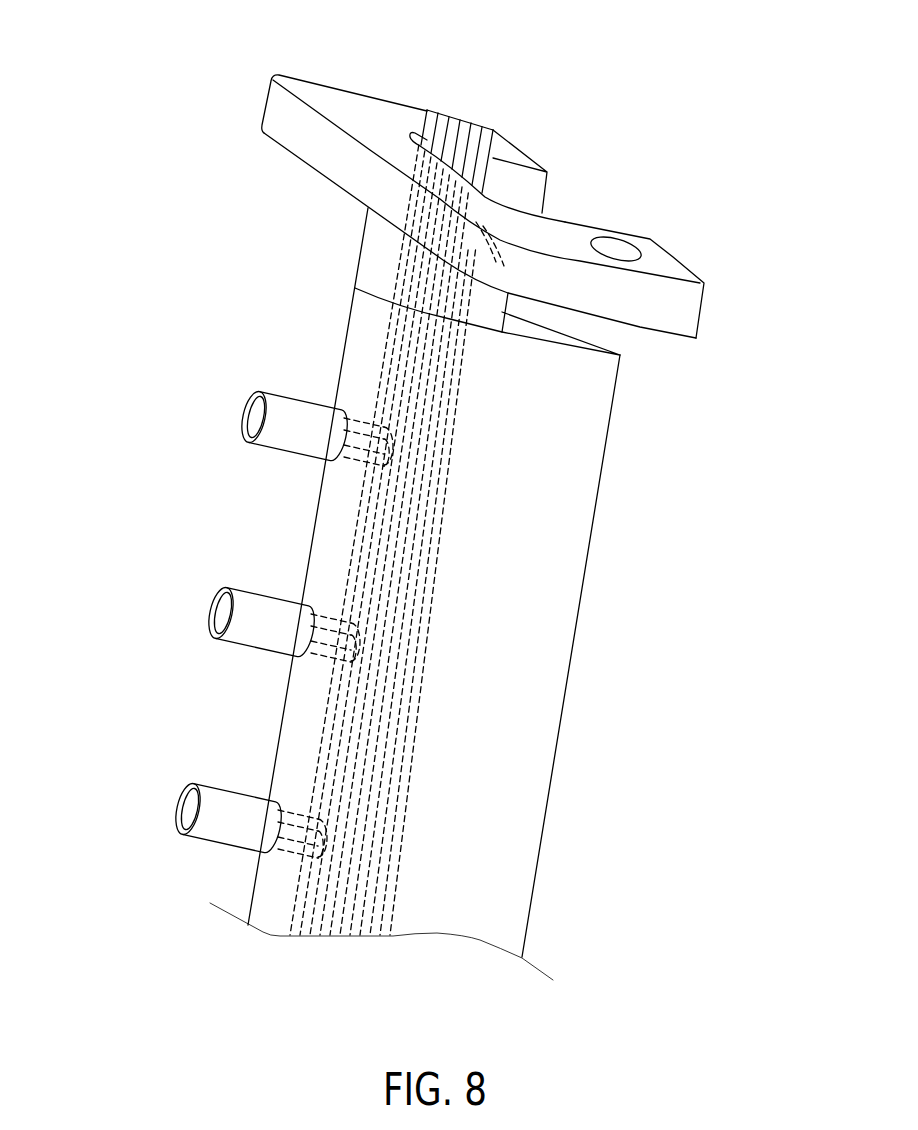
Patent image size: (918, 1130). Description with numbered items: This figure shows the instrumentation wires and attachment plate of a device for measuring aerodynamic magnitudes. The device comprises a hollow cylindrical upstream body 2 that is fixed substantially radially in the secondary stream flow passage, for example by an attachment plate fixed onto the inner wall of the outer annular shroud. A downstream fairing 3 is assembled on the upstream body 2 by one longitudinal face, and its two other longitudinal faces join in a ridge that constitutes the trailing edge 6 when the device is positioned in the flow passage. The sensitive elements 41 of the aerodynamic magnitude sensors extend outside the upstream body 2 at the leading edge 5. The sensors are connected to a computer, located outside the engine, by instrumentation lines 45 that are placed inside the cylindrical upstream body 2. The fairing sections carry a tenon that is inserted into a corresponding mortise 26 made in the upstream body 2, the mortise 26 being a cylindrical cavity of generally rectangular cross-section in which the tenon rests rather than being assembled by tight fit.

The upstream body 2 is at (348, 354).
The downstream fairing 3 is at (545, 672).
The leading edge 5 is at (296, 508).
The trailing edge 6 is at (600, 556).
The mortise 26 is at (678, 258).
The sensitive elements 41 is at (233, 405).
The instrumentation lines 45 is at (466, 110).